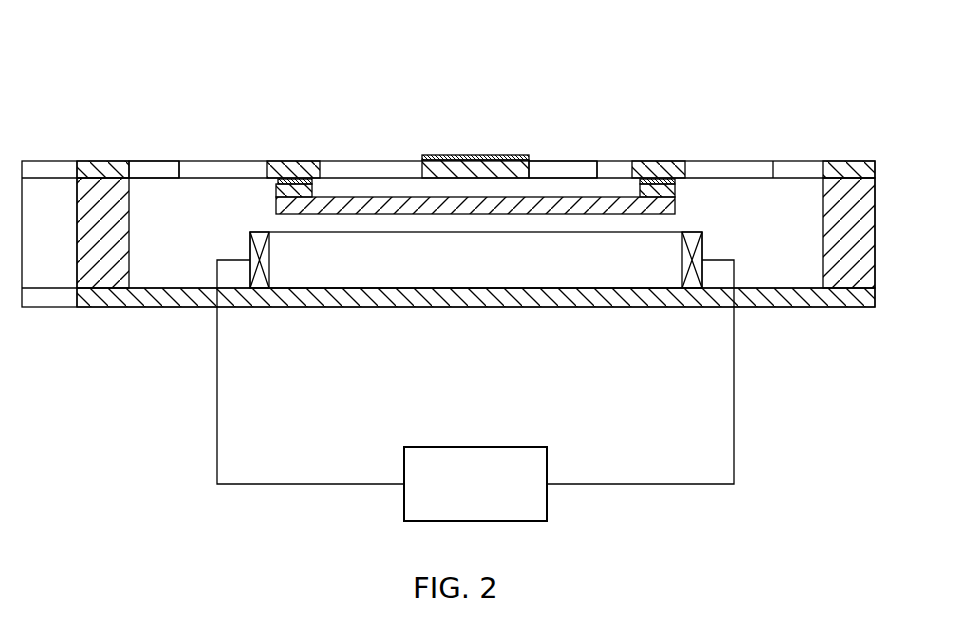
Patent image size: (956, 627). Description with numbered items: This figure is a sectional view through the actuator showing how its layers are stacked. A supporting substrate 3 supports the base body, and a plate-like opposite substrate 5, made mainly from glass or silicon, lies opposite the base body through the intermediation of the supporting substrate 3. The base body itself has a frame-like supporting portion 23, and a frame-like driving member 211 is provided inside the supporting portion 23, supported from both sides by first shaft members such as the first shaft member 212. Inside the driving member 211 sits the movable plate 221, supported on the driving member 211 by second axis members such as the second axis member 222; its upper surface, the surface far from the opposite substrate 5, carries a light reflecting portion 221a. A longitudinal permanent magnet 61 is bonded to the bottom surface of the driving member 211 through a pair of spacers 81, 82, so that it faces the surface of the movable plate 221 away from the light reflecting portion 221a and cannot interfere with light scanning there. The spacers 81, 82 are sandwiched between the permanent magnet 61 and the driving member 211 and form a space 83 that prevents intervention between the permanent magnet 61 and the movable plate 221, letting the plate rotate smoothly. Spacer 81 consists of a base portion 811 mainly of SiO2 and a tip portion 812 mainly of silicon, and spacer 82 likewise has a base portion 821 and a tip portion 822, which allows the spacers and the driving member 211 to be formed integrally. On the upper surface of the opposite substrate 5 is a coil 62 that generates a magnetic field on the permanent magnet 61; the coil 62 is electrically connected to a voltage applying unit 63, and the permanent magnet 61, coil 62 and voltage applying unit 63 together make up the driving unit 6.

The supporting substrate 3 is at (857, 233).
The opposite substrate 5 is at (858, 297).
The supporting portion 23 is at (90, 168).
The driving member 211 is at (292, 165).
The first shaft member 212 is at (200, 170).
The movable plate 221 is at (487, 165).
The light reflecting portion 221a is at (435, 158).
The second axis member 222 is at (553, 172).
The space 83 is at (393, 197).
The spacer 81 is at (230, 111).
The base portion 811 is at (272, 180).
The tip portion 812 is at (283, 186).
The spacer 82 is at (726, 125).
The base portion 821 is at (668, 180).
The tip portion 822 is at (677, 190).
The driving unit 6 is at (475, 382).
The permanent magnet 61 is at (352, 203).
The coil 62 is at (303, 270).
The voltage applying unit 63 is at (443, 489).